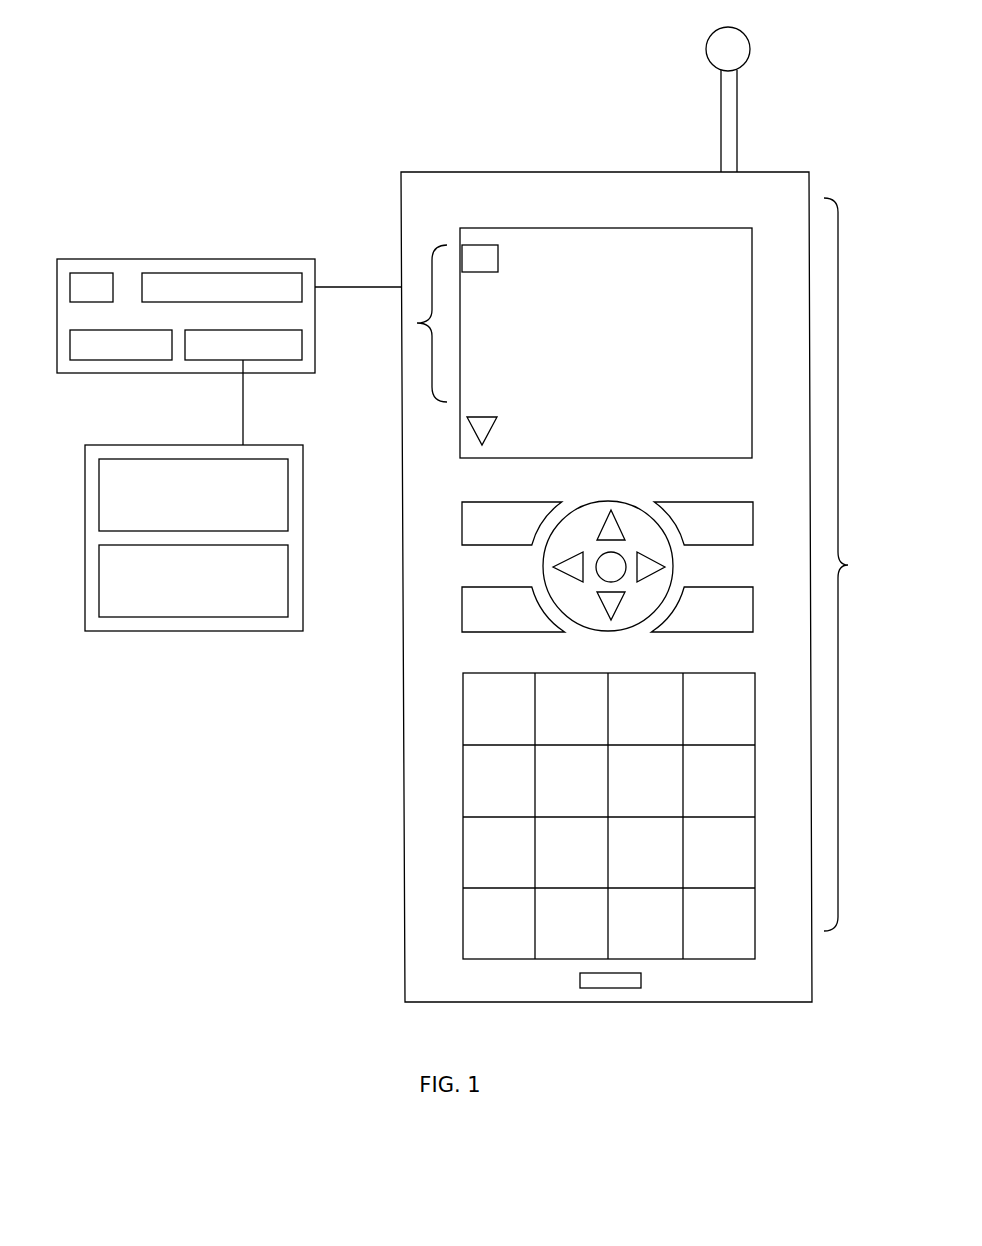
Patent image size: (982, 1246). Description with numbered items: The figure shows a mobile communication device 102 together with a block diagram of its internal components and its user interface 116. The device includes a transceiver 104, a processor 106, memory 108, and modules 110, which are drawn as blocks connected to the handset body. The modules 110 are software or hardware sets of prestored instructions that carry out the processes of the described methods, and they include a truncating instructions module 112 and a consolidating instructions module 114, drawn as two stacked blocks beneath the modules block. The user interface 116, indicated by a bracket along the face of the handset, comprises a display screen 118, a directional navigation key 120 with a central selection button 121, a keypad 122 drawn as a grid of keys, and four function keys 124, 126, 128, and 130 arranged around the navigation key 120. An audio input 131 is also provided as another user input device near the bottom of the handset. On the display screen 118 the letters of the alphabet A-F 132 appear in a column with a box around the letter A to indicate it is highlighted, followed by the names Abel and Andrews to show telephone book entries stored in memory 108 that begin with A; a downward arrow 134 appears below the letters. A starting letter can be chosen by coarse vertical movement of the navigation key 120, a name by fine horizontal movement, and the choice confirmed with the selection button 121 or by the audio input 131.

The mobile communication device 102 is at (780, 170).
The transceiver 104 is at (83, 272).
The processor 106 is at (243, 273).
The memory 108 is at (112, 360).
The modules 110 is at (272, 360).
The truncating instructions module 112 is at (99, 473).
The consolidating instructions module 114 is at (99, 558).
The user interface 116 is at (859, 564).
The display screen 118 is at (532, 228).
The directional navigation key 120 is at (580, 623).
The selection button 121 is at (605, 572).
The keypad 122 is at (462, 788).
The function key 124 is at (462, 532).
The function key 126 is at (462, 600).
The function key 128 is at (740, 500).
The function key 130 is at (727, 632).
The audio input 131 is at (627, 988).
The letters of the alphabet A-F 132 is at (429, 329).
The downward arrow 134 is at (472, 433).